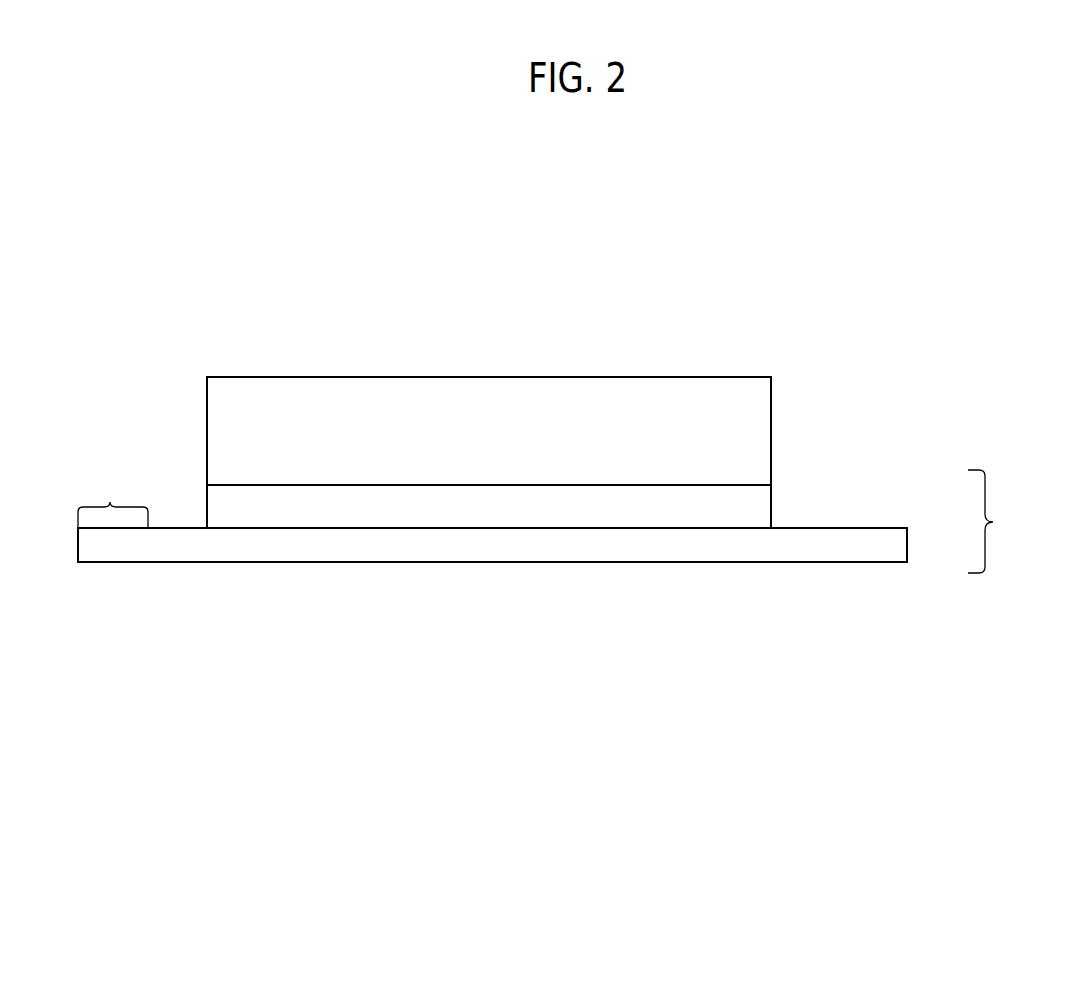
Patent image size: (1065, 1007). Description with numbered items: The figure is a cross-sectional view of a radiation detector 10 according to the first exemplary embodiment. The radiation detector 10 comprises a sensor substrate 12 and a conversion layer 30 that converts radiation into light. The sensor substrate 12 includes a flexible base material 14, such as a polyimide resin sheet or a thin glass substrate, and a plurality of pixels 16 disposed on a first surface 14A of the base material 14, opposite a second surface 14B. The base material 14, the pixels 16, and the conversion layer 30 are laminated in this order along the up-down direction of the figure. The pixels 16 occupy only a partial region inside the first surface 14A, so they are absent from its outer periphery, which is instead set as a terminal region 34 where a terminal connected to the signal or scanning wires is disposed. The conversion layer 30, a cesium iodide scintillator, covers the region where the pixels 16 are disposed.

The radiation detector 10 is at (955, 683).
The sensor substrate 12 is at (999, 521).
The base material 14 is at (888, 548).
The first surface 14A is at (262, 527).
The second surface 14B is at (662, 565).
The pixels 16 is at (758, 494).
The conversion layer 30 is at (757, 432).
The terminal region 34 is at (113, 495).